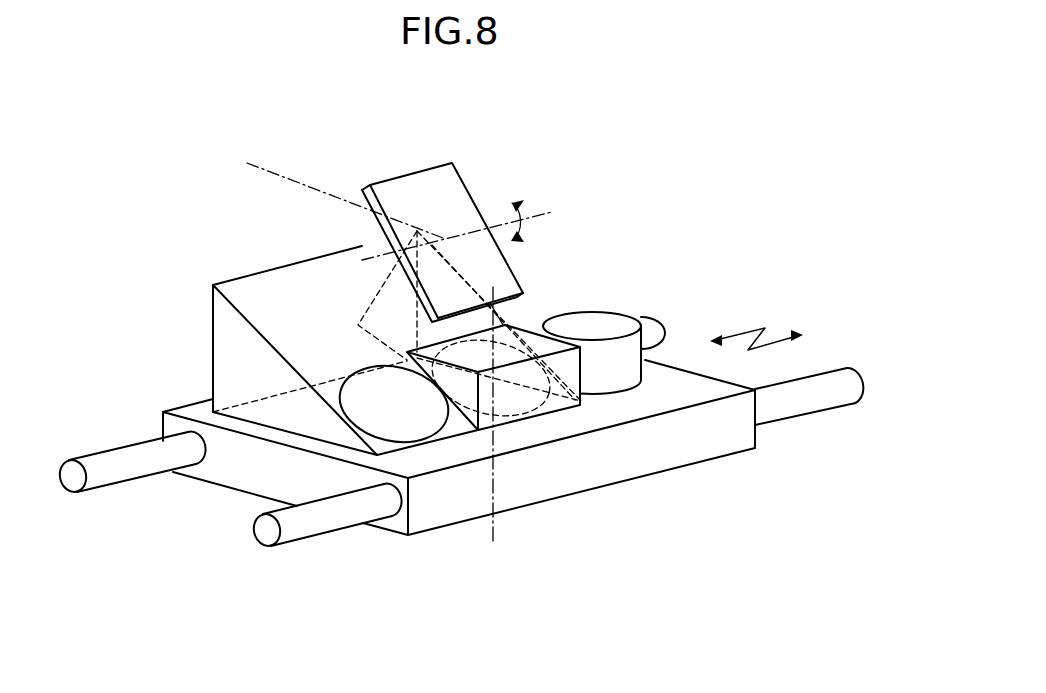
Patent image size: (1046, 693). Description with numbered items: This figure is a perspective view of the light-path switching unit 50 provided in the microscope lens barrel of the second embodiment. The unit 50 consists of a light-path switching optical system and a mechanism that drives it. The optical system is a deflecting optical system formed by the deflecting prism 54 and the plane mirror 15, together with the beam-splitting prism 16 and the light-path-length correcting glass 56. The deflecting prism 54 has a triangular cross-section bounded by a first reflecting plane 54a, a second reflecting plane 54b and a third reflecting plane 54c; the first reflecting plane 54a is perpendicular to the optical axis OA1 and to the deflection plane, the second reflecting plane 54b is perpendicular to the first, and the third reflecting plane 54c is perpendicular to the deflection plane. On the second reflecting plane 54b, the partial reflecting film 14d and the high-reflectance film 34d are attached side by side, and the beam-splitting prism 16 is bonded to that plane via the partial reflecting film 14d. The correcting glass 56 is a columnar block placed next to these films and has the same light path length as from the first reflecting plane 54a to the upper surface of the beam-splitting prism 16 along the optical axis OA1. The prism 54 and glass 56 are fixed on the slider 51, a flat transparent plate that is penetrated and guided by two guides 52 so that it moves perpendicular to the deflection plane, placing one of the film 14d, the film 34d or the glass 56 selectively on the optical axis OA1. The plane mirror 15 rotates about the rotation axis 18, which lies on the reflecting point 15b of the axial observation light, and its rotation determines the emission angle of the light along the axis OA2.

The light-path switching unit 50 is at (744, 148).
The slider 51 is at (710, 452).
The guide 52 is at (107, 490).
The deflecting prism 54 is at (231, 282).
The first reflecting plane 54a is at (278, 410).
The second reflecting plane 54b is at (308, 270).
The third reflecting plane 54c is at (240, 345).
The high-reflectance film 34d is at (410, 442).
The plane mirror 15 is at (434, 168).
The reflecting point 15b is at (445, 240).
The rotation axis 18 is at (538, 212).
The beam-splitting prism 16 is at (572, 406).
The partial reflecting film 14d is at (517, 403).
The light-path-length correcting glass 56 is at (608, 320).
The optical axis OA1 is at (493, 547).
The optical axis 2 OA2 is at (278, 175).